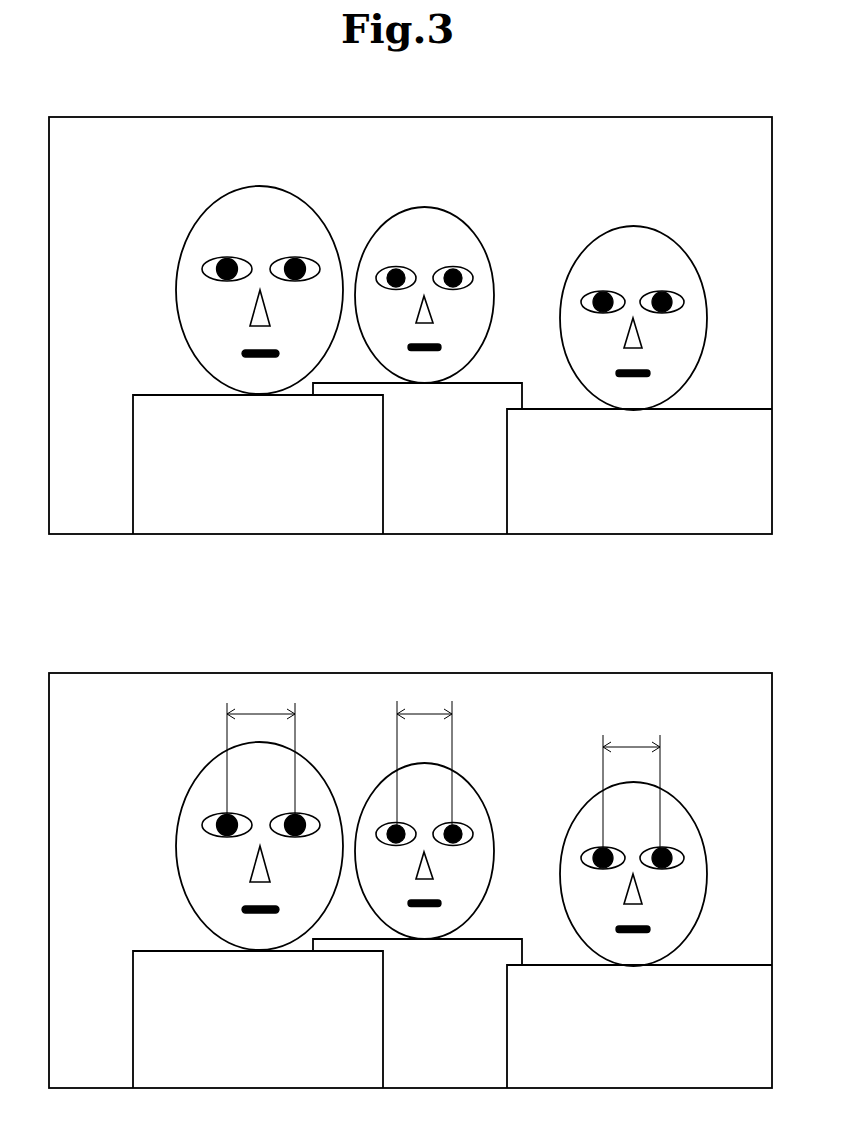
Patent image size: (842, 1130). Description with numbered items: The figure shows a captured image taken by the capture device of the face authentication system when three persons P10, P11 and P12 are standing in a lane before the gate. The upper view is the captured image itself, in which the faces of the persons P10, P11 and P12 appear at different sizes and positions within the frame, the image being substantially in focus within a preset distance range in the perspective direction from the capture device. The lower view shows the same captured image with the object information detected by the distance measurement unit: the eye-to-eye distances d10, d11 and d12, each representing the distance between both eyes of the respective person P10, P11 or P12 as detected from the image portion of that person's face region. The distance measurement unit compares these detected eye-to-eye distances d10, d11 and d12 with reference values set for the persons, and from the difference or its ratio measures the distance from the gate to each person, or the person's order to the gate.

The person P11 is at (176, 276).
The person P12 is at (495, 264).
The person P10 is at (707, 277).
The eye-to-eye distance d11 is at (261, 756).
The eye-to-eye distance d12 is at (424, 760).
The eye-to-eye distance d10 is at (631, 789).